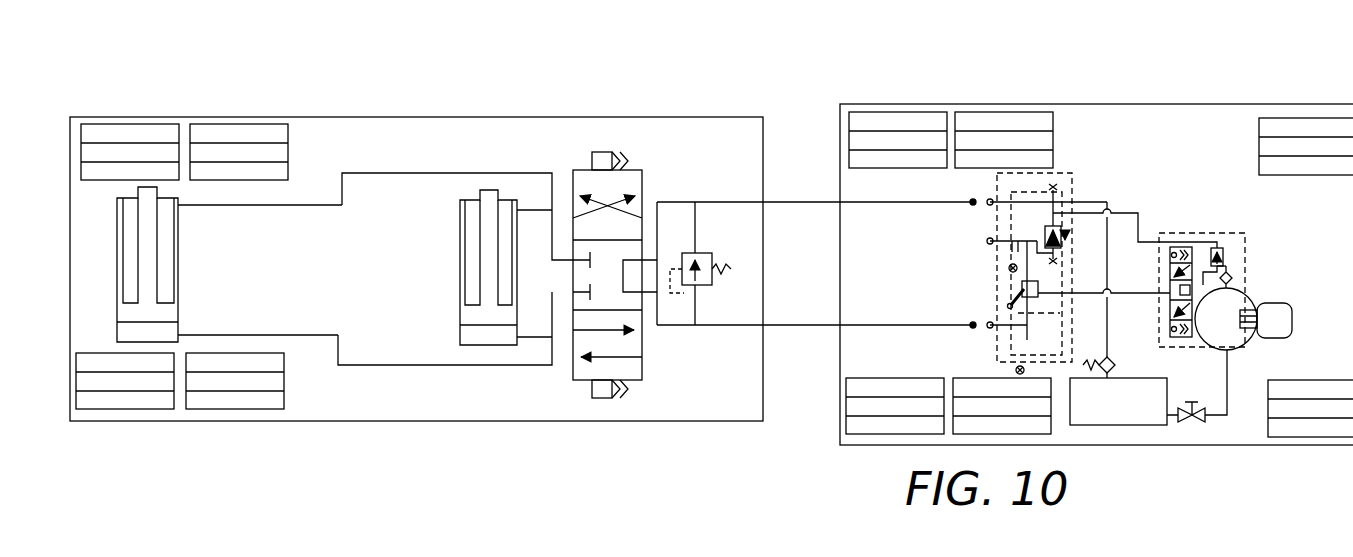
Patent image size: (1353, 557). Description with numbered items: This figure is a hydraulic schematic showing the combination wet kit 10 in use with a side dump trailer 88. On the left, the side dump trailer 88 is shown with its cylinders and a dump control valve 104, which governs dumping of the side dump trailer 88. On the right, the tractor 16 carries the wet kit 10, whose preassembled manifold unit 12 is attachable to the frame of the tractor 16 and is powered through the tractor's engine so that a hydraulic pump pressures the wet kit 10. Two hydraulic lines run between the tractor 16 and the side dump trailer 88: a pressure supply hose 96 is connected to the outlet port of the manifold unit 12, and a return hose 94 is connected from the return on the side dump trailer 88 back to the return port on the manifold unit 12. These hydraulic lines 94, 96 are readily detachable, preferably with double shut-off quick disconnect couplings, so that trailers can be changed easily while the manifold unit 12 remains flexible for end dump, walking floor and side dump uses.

The wet kit 10 is at (1145, 183).
The manifold unit 12 is at (1073, 167).
The tractor 16 is at (1170, 107).
The side dump trailer 88 is at (437, 118).
The return hose 94 is at (790, 200).
The pressure supply hose 96 is at (810, 327).
The dump control valve 104 is at (637, 180).